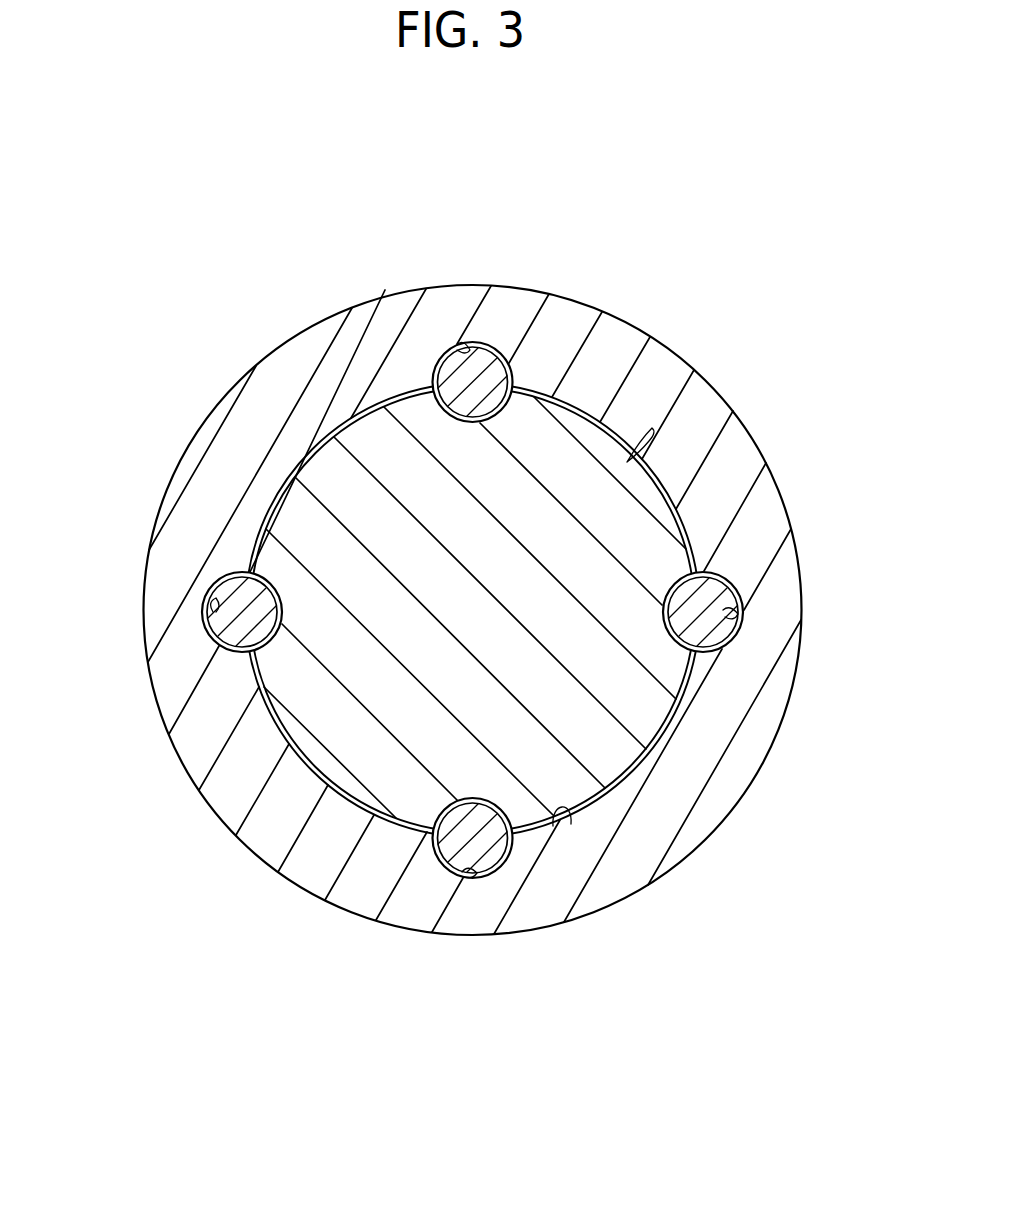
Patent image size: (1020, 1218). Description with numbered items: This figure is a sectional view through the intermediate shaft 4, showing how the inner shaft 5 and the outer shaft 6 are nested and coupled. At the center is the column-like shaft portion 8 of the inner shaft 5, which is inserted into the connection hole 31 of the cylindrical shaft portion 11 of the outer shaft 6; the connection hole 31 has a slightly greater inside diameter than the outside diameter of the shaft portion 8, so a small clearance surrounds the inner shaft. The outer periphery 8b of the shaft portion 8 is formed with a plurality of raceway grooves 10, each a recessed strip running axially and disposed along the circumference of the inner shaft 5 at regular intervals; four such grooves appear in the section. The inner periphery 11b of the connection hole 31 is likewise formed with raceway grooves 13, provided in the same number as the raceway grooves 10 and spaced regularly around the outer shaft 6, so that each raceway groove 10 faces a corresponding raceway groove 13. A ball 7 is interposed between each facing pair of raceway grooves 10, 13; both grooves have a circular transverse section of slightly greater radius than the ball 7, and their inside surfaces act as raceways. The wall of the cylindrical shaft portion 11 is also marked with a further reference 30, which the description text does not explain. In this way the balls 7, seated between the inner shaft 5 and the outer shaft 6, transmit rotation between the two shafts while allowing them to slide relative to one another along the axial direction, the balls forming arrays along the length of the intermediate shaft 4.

The intermediate shaft 4 is at (481, 591).
The inner shaft 5 is at (330, 713).
The outer shaft 6 is at (710, 798).
The ball 7 is at (455, 378).
The shaft portion 8 is at (338, 790).
The outer periphery 8b is at (345, 797).
The raceway groove 10 is at (478, 357).
The cylindrical shaft portion 11 is at (628, 852).
The inner periphery 11b is at (557, 826).
The raceway groove 13 is at (457, 345).
The intermediate layer 30 is at (722, 677).
The connection hole 31 is at (640, 447).